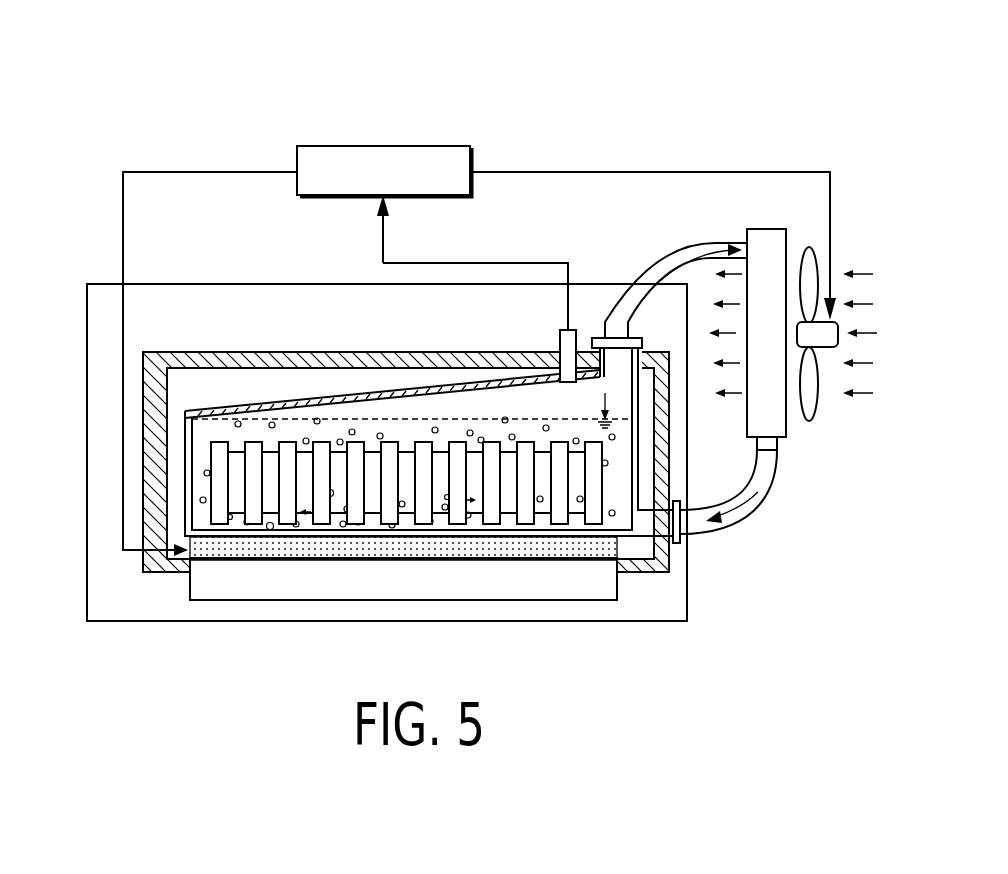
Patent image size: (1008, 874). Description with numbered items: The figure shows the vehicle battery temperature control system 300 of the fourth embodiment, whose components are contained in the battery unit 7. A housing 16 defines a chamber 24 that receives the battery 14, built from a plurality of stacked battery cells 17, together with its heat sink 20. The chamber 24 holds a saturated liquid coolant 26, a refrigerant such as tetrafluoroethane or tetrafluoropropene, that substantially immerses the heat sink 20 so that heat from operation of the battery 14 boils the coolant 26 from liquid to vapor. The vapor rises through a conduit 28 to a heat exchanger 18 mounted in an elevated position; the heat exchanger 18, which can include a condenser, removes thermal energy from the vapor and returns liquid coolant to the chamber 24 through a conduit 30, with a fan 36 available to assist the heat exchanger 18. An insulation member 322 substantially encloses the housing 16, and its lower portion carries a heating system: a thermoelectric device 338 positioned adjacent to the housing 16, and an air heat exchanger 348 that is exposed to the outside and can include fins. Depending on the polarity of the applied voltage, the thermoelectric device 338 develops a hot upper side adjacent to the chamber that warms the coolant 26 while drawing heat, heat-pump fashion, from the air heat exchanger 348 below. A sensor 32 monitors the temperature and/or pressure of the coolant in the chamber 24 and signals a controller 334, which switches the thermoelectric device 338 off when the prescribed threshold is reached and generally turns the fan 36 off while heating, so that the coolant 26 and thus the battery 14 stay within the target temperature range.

The vehicle battery temperature control system 300 is at (710, 112).
The battery unit 7 is at (150, 622).
The controller 334 is at (370, 146).
The insulation member 322 is at (250, 352).
The air heat exchanger 348 is at (258, 603).
The thermoelectric device 338 is at (592, 552).
The saturated liquid coolant 26 is at (372, 419).
The stacked battery cells 17 is at (237, 452).
The heat sink 20 is at (210, 460).
The housing 16 is at (268, 410).
The chamber 24 is at (468, 402).
The battery 14 is at (196, 490).
The sensor 32 is at (572, 330).
The conduit 28 is at (668, 262).
The conduit 30 is at (763, 497).
The heat exchanger 18 is at (787, 432).
The fan 36 is at (840, 330).